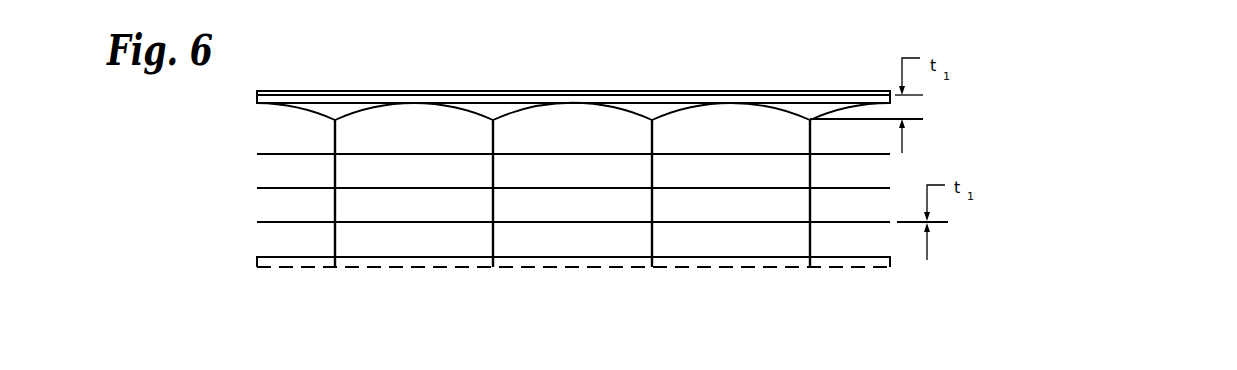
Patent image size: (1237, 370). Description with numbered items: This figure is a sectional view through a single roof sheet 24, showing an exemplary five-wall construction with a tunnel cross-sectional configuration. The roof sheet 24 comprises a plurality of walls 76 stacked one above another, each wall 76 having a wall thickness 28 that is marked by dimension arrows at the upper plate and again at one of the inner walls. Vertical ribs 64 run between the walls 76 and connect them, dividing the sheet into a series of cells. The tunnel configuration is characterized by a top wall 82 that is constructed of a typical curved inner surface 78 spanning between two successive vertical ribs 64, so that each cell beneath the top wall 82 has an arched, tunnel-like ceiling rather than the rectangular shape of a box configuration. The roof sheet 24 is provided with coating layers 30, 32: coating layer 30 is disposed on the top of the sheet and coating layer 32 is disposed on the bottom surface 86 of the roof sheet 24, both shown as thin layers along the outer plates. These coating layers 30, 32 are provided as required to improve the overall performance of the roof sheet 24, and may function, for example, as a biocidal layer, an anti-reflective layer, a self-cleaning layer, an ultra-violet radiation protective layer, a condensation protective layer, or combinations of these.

The roof sheet 24 is at (304, 59).
The wall thickness 28 is at (903, 146).
The coating layer 30 is at (440, 95).
The coating layer 32 is at (420, 262).
The vertical ribs 64 is at (337, 246).
The wall 76 is at (575, 153).
The curved inner surface 78 is at (398, 110).
The top wall 82 is at (700, 100).
The bottom surface 86 is at (292, 257).